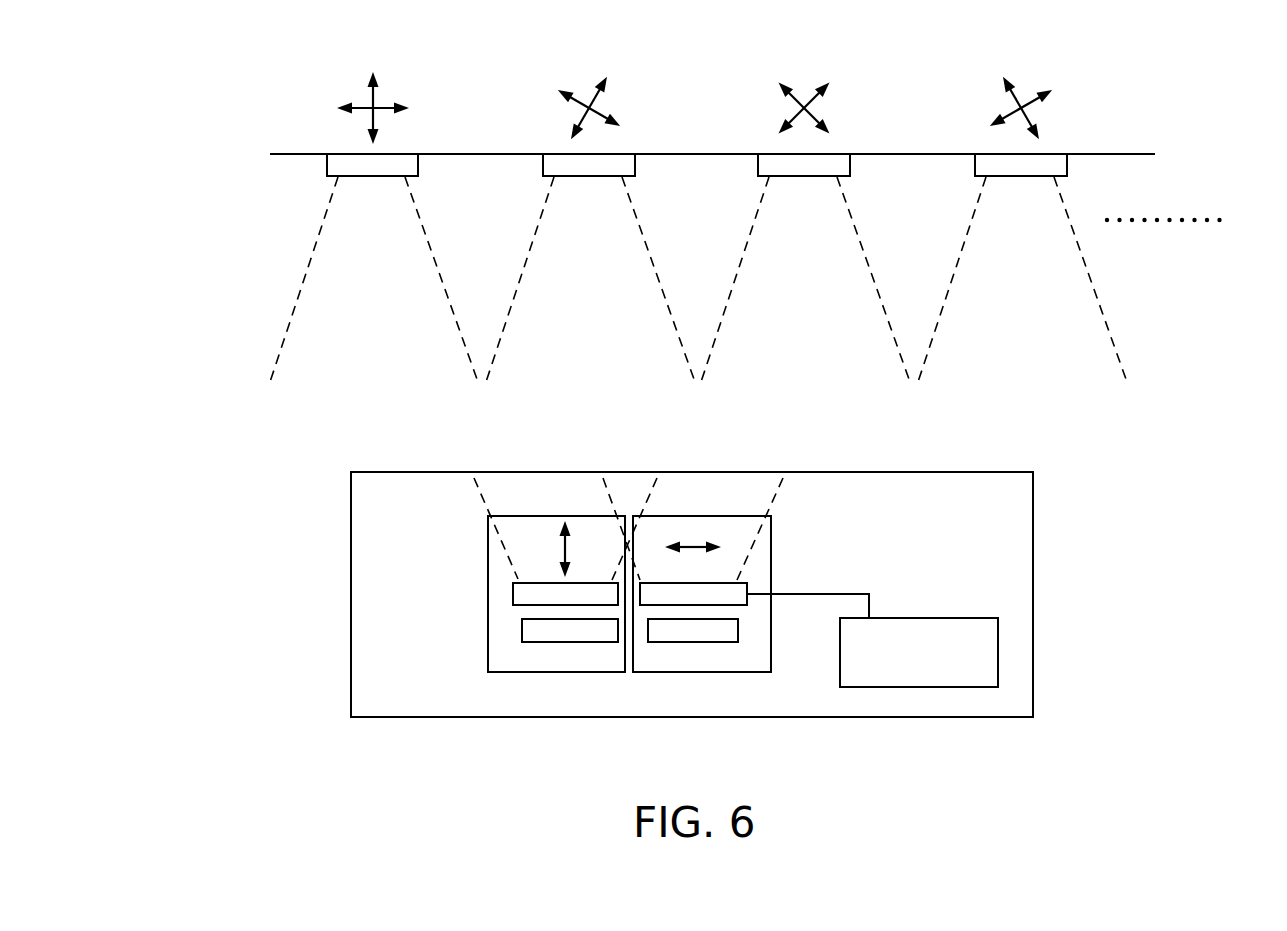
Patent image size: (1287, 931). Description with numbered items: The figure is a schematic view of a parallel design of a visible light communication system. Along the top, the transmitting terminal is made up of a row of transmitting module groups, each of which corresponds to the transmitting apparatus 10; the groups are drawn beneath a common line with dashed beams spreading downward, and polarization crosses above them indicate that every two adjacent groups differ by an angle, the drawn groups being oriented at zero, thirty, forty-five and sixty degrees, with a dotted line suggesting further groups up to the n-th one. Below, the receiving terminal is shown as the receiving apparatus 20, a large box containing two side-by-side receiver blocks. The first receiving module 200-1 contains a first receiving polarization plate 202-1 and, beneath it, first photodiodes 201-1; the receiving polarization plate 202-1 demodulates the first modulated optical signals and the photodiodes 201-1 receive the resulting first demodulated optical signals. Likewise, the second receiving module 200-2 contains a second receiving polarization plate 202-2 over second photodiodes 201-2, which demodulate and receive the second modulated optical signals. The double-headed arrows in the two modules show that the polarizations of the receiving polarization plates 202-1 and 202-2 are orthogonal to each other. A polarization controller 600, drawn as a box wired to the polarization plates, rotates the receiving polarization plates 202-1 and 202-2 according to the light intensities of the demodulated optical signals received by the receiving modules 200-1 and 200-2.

The transmitting apparatus 10 is at (1156, 116).
The receiving apparatus 20 is at (1033, 503).
The first receiving module 200-1 is at (488, 555).
The first receiving polarization plate 202-1 is at (513, 595).
The first photodiodes 201-1 is at (522, 630).
The second receiving module 200-2 is at (771, 543).
The second receiving polarization plate 202-2 is at (747, 587).
The second photodiodes 201-2 is at (738, 630).
The polarization controller 600 is at (998, 652).